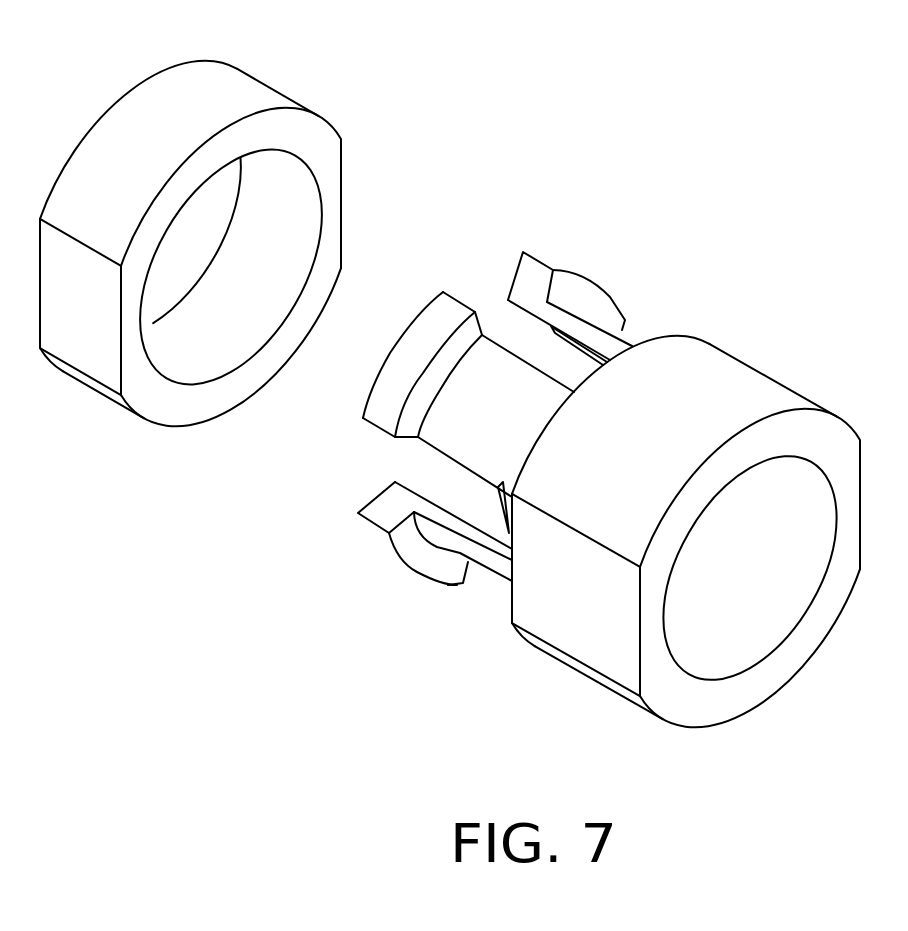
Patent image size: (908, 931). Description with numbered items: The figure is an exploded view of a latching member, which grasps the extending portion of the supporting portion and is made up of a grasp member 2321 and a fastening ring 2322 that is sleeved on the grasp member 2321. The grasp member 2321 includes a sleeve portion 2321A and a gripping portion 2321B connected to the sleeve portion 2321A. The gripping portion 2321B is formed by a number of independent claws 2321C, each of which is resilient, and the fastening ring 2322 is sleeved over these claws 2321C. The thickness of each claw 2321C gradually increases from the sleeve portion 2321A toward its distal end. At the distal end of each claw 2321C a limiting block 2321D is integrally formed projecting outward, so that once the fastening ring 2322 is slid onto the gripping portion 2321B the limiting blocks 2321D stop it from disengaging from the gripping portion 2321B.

The fastening ring 2322 is at (240, 100).
The grasp member 2321 is at (770, 202).
The sleeve portion 2321A is at (700, 377).
The gripping portion 2321B is at (622, 268).
The claw 2321C is at (473, 552).
The limiting block 2321D is at (383, 542).